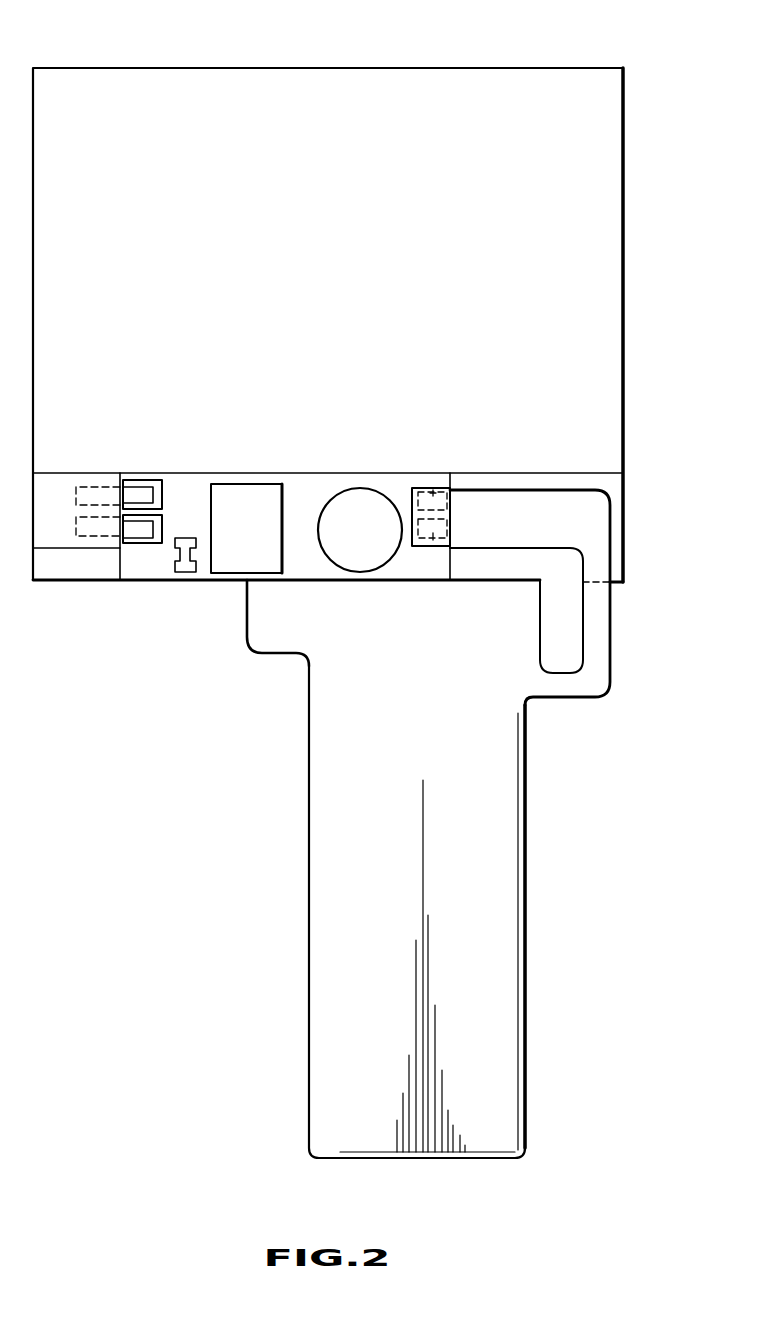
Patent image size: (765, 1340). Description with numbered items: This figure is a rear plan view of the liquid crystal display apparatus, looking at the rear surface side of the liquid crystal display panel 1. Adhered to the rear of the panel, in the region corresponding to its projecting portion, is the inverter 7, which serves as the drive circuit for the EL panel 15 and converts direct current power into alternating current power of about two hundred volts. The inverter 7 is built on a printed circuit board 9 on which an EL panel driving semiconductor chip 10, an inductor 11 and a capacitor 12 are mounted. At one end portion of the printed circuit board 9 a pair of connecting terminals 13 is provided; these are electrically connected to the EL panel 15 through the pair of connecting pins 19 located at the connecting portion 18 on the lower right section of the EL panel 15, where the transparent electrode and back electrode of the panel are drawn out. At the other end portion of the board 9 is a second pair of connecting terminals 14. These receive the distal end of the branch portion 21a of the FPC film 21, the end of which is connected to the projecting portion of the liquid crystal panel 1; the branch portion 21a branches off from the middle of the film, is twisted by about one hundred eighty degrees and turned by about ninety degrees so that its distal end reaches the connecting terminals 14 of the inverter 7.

The liquid crystal display panel 1 is at (345, 113).
The inverter 7 is at (306, 553).
The printed circuit board 9 is at (190, 493).
The EL panel driving semiconductor chip 10 is at (242, 500).
The inductor 11 is at (365, 515).
The capacitor 12 is at (185, 572).
The connecting terminals 13 is at (158, 484).
The connecting terminals 14 is at (434, 496).
The EL panel 15 is at (437, 104).
The connecting portion 18 is at (73, 548).
The connecting pins 19 is at (135, 495).
The FPC film 21 is at (524, 1025).
The branch portion 21a is at (598, 650).